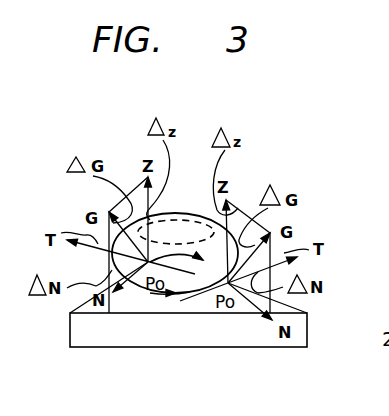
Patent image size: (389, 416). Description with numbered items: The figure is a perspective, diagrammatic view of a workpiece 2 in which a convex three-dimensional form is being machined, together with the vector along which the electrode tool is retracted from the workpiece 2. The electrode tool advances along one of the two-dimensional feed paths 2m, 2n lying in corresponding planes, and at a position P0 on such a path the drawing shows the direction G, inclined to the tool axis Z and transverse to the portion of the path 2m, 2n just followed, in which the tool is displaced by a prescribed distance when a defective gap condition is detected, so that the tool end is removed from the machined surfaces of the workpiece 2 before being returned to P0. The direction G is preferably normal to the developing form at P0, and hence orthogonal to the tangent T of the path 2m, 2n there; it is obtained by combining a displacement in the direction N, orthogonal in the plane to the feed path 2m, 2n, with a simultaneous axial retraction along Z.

The workpiece 2 is at (80, 337).
The two-dimensional path 2m is at (189, 230).
The two-dimensional path 2n is at (152, 294).